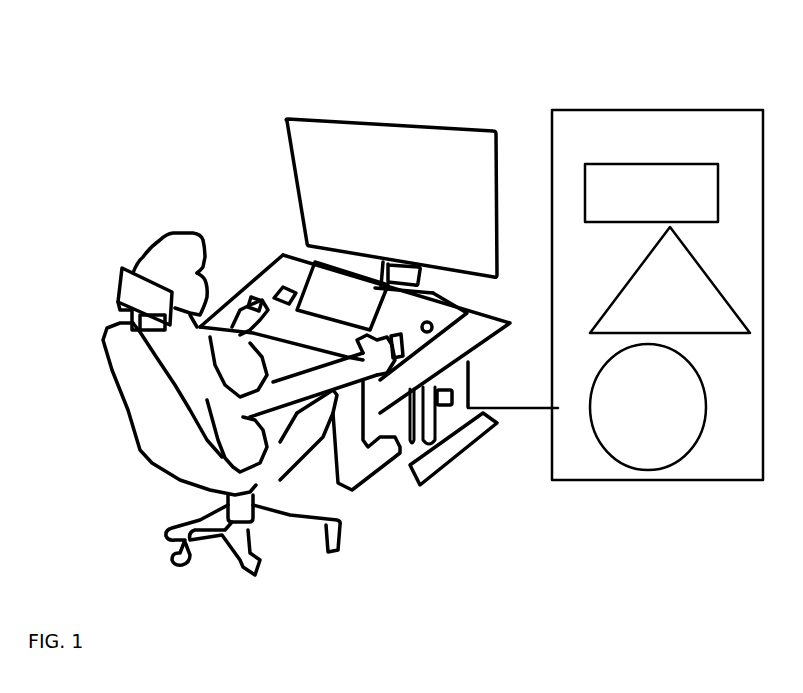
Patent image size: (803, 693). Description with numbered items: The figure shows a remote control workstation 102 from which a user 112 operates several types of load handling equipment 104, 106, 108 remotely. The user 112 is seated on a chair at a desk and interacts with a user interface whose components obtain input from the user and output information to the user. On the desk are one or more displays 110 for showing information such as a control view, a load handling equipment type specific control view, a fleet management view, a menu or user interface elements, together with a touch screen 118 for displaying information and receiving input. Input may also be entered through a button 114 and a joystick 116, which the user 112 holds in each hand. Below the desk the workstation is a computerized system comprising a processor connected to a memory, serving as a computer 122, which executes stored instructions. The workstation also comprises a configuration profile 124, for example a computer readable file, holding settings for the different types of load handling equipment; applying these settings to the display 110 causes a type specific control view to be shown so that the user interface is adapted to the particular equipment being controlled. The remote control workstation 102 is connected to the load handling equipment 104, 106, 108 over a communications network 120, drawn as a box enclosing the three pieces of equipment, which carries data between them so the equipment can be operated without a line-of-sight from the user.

The remote control workstation 102 is at (183, 130).
The load handling equipment 104 is at (651, 193).
The load handling equipment 106 is at (670, 280).
The load handling equipment 108 is at (648, 407).
The display 110 is at (391, 206).
The user 112 is at (251, 404).
The button 114 is at (435, 334).
The joystick 116 is at (252, 298).
The touch screen 118 is at (331, 296).
The communications network 120 is at (657, 295).
The computer 122 is at (420, 450).
The configuration profile 124 is at (452, 412).